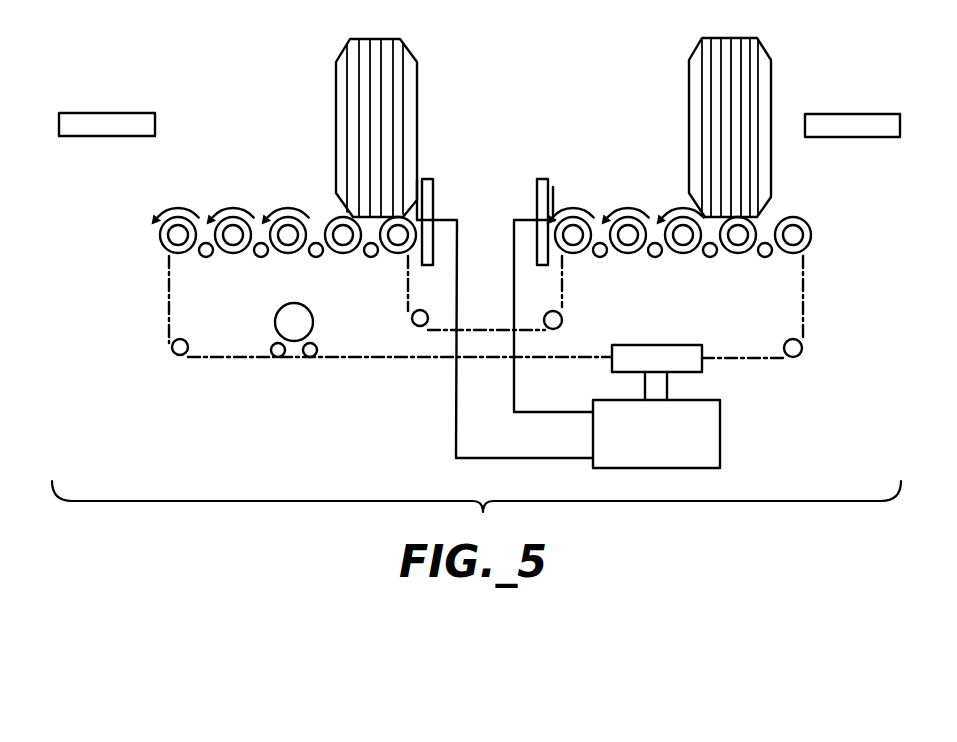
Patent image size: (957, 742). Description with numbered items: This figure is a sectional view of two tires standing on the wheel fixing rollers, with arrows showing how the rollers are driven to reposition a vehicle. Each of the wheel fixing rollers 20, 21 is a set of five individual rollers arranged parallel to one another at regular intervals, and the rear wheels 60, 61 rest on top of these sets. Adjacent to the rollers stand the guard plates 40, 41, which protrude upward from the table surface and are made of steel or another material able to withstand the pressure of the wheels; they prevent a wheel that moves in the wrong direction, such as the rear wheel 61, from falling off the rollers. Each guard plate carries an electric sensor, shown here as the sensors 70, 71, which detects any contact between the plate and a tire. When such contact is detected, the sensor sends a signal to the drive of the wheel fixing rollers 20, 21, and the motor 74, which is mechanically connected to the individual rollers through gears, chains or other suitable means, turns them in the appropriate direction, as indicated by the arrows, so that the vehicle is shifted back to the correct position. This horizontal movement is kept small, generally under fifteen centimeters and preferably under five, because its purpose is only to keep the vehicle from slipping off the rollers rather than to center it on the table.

The wheel fixing roller 20 is at (815, 232).
The wheel fixing roller 21 is at (158, 232).
The guard plate 40 is at (540, 183).
The guard plate 41 is at (430, 197).
The rear wheel 60 is at (697, 52).
The rear wheel 61 is at (413, 52).
The electric sensor 70 is at (553, 187).
The electric sensor 71 is at (418, 180).
The motor 74 is at (717, 420).